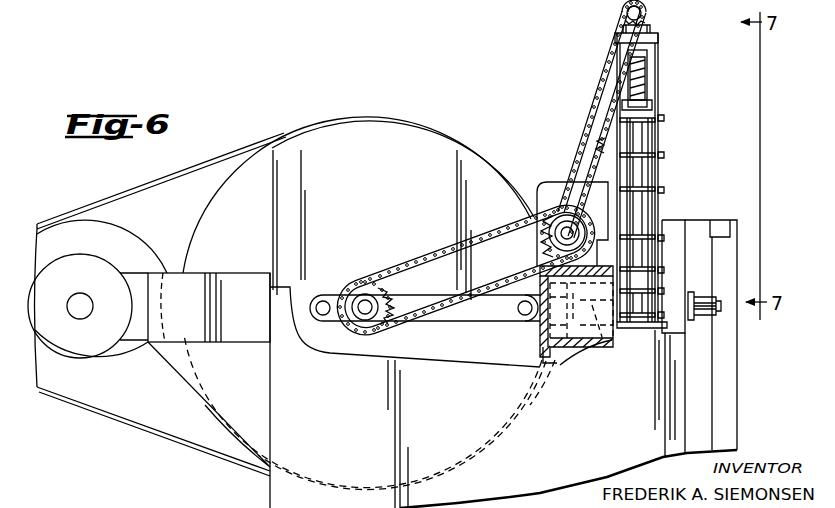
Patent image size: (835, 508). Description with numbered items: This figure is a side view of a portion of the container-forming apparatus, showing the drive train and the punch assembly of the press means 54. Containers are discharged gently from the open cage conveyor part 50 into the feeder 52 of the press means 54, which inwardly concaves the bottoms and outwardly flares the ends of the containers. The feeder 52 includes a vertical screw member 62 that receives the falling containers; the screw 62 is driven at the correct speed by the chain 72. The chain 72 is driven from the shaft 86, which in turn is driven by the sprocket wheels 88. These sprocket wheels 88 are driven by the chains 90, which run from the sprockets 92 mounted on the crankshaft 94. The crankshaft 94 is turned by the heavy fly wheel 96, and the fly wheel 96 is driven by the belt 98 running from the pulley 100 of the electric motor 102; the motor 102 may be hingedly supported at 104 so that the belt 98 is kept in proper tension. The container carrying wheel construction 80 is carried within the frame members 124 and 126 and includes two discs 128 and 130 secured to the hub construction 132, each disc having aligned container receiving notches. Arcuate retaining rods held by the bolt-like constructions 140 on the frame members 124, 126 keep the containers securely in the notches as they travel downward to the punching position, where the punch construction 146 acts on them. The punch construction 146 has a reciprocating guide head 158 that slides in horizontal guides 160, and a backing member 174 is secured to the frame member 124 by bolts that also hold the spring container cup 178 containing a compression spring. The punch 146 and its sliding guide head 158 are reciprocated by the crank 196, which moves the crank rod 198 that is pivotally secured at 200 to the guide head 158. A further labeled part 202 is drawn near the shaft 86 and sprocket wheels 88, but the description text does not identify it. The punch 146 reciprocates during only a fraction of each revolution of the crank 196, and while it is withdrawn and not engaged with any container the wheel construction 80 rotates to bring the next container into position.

The open cage conveyor part 50 is at (617, 4).
The feeder 52 is at (673, 53).
The press means 54 is at (451, 96).
The vertical screw member 62 is at (641, 73).
The chain 72 is at (596, 90).
The container carrying wheel construction 80 is at (667, 248).
The shaft 86 is at (550, 187).
The sprocket wheels 88 is at (550, 243).
The chains 90 is at (447, 241).
The sprockets 92 is at (387, 297).
The crankshaft 94 is at (366, 294).
The fly wheel 96 is at (433, 148).
The belt 98 is at (183, 173).
The pulley 100 is at (110, 232).
The electric motor 102 is at (107, 275).
The hinged support 104 is at (137, 283).
The frame member 124 is at (660, 167).
The frame member 126 is at (617, 170).
The disc 128 is at (650, 145).
The disc 130 is at (628, 135).
The hub construction 132 is at (656, 210).
The bolt-like constructions 140 is at (665, 118).
The punch construction 146 is at (613, 347).
The reciprocating guide head 158 is at (549, 383).
The horizontal guides 160 is at (580, 352).
The backing member 174 is at (673, 224).
The spring container cup 178 is at (712, 313).
The crank 196 is at (323, 300).
The crank rod 198 is at (432, 322).
The pivot 200 is at (523, 312).
The sprocket hub 202 is at (562, 226).